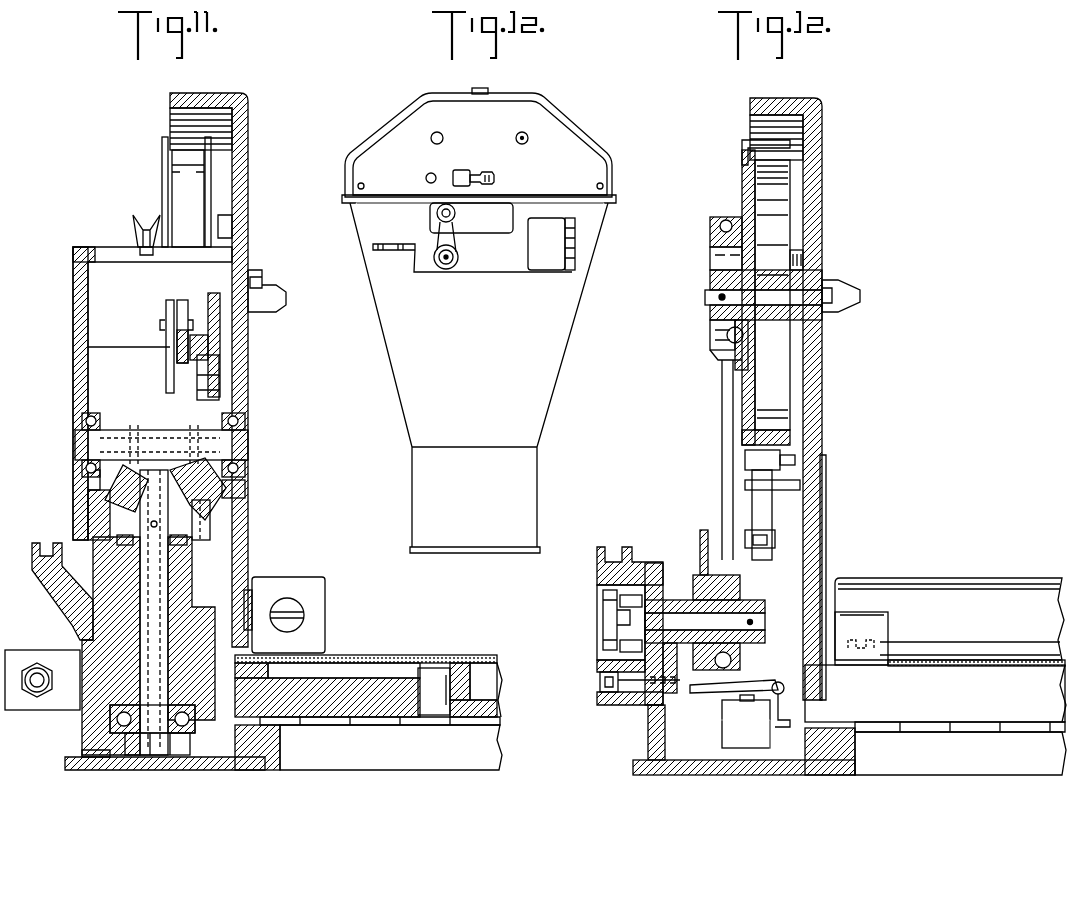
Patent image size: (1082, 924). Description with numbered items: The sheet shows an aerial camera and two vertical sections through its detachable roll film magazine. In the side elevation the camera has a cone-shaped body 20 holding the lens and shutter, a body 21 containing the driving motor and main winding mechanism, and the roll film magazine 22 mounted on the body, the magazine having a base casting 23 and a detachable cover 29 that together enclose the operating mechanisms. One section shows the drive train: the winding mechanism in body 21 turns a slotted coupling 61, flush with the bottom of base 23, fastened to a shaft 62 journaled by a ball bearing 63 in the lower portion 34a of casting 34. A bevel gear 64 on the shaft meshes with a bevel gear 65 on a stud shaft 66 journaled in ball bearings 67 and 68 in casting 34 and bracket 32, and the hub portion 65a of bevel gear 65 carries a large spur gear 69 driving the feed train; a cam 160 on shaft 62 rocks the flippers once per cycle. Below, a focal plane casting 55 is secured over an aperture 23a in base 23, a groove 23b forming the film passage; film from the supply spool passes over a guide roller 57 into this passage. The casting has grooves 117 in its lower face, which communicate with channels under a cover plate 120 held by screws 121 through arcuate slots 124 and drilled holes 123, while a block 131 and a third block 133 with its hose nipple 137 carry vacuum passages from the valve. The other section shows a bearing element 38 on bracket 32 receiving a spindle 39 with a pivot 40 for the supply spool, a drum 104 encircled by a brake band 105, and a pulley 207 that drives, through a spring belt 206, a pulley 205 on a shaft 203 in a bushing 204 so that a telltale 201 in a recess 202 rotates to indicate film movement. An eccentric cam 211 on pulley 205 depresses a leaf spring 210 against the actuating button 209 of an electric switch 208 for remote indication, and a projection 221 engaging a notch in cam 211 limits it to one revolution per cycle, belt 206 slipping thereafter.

In FIG. 16, the cone-shaped body 20 is at (558, 365).
In FIG. 16, the body 21 is at (604, 245).
In FIG. 16, the roll film magazine 22 is at (590, 120).
In FIG. 11, the base casting 23 is at (265, 768).
In FIG. 12, the base casting 23 is at (650, 748).
In FIG. 11, the aperture 23a is at (281, 740).
In FIG. 12, the aperture 23a is at (855, 748).
In FIG. 11, the groove 23b is at (275, 700).
In FIG. 12, the groove 23b is at (838, 725).
In FIG. 16, the cover 29 is at (525, 93).
In FIG. 11, the bracket 32 is at (238, 360).
In FIG. 12, the bracket 32 is at (812, 186).
In FIG. 11, the casting 34 is at (72, 318).
In FIG. 11, the lower portion of casting 34a is at (105, 688).
In FIG. 11, the bearing element 38 is at (226, 227).
In FIG. 12, the bearing element 38 is at (816, 266).
In FIG. 12, the spindle 39 is at (780, 305).
In FIG. 11, the pivot 40 is at (266, 282).
In FIG. 12, the pivot 40 is at (848, 290).
In FIG. 11, the focal plane casting 55 is at (498, 672).
In FIG. 12, the focal plane casting 55 is at (954, 729).
In FIG. 12, the guide roller 57 is at (968, 580).
In FIG. 11, the slotted coupling 61 is at (120, 760).
In FIG. 11, the shaft 62 is at (140, 628).
In FIG. 11, the ball bearing 63 is at (110, 722).
In FIG. 11, the bevel gear 64 is at (120, 505).
In FIG. 11, the bevel gear 65 is at (205, 480).
In FIG. 11, the hub portion 65a is at (246, 465).
In FIG. 11, the stud shaft 66 is at (110, 430).
In FIG. 11, the ball bearing 67 is at (82, 421).
In FIG. 11, the ball bearing 68 is at (246, 422).
In FIG. 11, the spur gear 69 is at (212, 318).
In FIG. 11, the drum 104 is at (162, 165).
In FIG. 12, the drum 104 is at (742, 167).
In FIG. 11, the brake band 105 is at (186, 140).
In FIG. 12, the brake band 105 is at (760, 145).
In FIG. 11, the grooves 117 is at (330, 690).
In FIG. 12, the grooves 117 is at (888, 732).
In FIG. 11, the cover plate 120 is at (393, 656).
In FIG. 12, the cover plate 120 is at (1026, 668).
In FIG. 11, the screws 121 is at (487, 660).
In FIG. 12, the screws 121 is at (965, 668).
In FIG. 11, the holes 123 is at (450, 658).
In FIG. 11, the arcuate slots 124 is at (452, 717).
In FIG. 11, the block 131 is at (278, 580).
In FIG. 11, the third block 133 is at (35, 648).
In FIG. 16, the third block 133 is at (463, 170).
In FIG. 11, the hose nipple 137 is at (37, 682).
In FIG. 16, the hose nipple 137 is at (490, 176).
In FIG. 11, the cam 160 is at (180, 744).
In FIG. 16, the telltale 201 is at (425, 177).
In FIG. 12, the telltale 201 is at (598, 592).
In FIG. 12, the recess 202 is at (600, 655).
In FIG. 12, the shaft 203 is at (655, 610).
In FIG. 12, the bushing 204 is at (670, 600).
In FIG. 12, the pulley 205 is at (722, 560).
In FIG. 12, the spring belt 206 is at (722, 393).
In FIG. 11, the pulley 207 is at (140, 215).
In FIG. 12, the pulley 207 is at (728, 208).
In FIG. 12, the electric switch 208 is at (716, 727).
In FIG. 12, the actuating button 209 is at (746, 721).
In FIG. 12, the leaf spring 210 is at (696, 692).
In FIG. 12, the eccentric cam 211 is at (655, 700).
In FIG. 12, the projection 221 is at (700, 560).